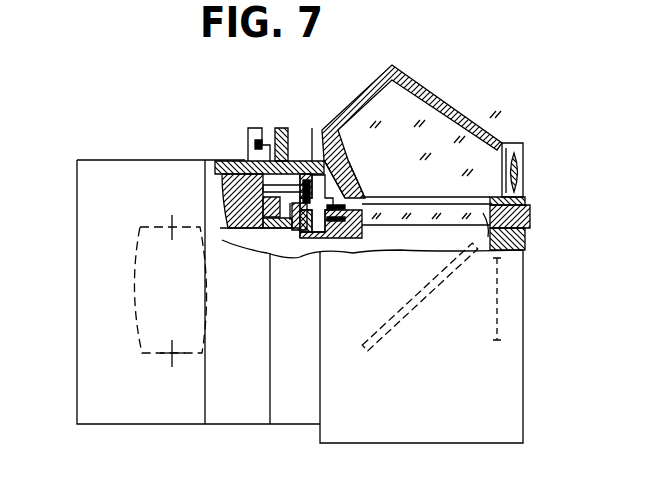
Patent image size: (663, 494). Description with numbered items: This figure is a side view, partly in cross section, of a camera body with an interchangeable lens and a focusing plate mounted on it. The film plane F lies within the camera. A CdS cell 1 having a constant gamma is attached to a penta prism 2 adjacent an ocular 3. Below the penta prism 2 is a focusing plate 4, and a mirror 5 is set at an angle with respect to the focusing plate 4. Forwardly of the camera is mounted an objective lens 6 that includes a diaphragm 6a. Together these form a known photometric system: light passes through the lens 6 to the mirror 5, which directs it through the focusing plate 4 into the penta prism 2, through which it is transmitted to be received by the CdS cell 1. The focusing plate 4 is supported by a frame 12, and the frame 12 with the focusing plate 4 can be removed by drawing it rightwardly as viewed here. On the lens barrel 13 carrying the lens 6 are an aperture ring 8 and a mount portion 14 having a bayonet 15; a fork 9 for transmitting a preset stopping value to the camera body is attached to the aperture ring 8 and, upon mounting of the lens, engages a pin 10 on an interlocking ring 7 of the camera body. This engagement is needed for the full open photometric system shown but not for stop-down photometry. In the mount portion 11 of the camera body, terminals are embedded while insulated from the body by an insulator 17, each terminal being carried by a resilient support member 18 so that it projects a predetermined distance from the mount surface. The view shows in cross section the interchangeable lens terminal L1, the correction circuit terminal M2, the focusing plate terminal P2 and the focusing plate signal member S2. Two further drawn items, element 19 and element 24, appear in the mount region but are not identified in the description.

The CdS cell 1 is at (505, 146).
The penta prism 2 is at (448, 107).
The ocular 3 is at (518, 168).
The focusing plate 4 is at (522, 240).
The mirror 5 is at (476, 250).
The objective lens 6 is at (128, 275).
The diaphragm 6a is at (172, 365).
The interlocking ring 7 is at (292, 161).
The aperture ring 8 is at (224, 165).
The fork 9 is at (248, 132).
The pin 10 is at (250, 132).
The mount portion of the camera body 11 is at (310, 238).
The frame 12 is at (531, 215).
The lens barrel 13 is at (130, 160).
The mount portion 14 is at (224, 229).
The bayonet 15 is at (291, 226).
The insulator 17 is at (287, 240).
The resilient support member 18 is at (298, 161).
The guide 19 is at (244, 229).
The light path window 24 is at (366, 216).
The interchangeable lens terminal L1 is at (298, 116).
The correction circuit terminal M2 is at (342, 193).
The focusing plate terminal P2 is at (328, 240).
The focusing plate signal member S2 is at (351, 238).
The film plane F is at (492, 325).